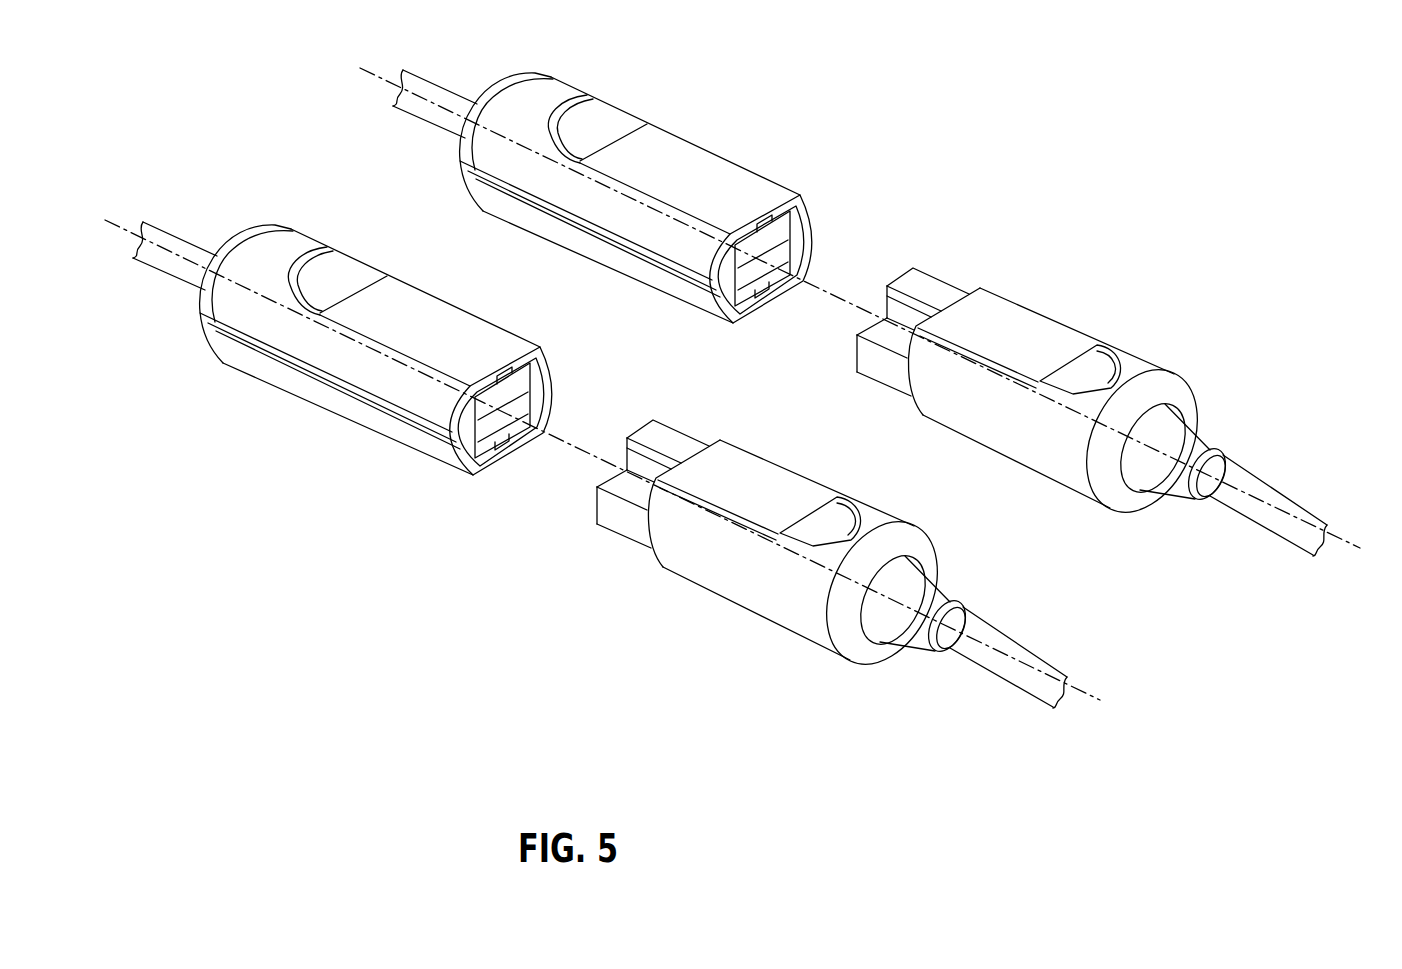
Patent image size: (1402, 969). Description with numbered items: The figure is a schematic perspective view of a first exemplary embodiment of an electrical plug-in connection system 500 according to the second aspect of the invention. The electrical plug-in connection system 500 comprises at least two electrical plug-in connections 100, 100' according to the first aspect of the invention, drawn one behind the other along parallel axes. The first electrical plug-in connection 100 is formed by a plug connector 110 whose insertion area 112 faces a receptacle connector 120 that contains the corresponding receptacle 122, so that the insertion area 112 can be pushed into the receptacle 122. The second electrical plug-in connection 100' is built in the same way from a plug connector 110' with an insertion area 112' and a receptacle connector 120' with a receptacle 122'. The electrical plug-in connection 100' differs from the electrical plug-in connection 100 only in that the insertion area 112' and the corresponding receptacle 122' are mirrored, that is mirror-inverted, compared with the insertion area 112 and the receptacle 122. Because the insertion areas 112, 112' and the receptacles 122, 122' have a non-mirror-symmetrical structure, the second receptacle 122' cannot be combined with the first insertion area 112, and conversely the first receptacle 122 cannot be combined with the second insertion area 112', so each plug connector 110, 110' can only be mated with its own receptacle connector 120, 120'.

The electrical plug-in connection system 500 is at (1115, 155).
The electrical plug-in connection 100 is at (826, 598).
The electrical plug-in connection 100' is at (1105, 363).
The plug connector 110 is at (826, 533).
The plug connector 110' is at (1085, 363).
The insertion area 112 is at (647, 444).
The insertion area 112' is at (906, 283).
The receptacle connector 120 is at (342, 405).
The receptacle connector 120' is at (602, 241).
The receptacle 122 is at (501, 475).
The receptacle 122' is at (771, 312).